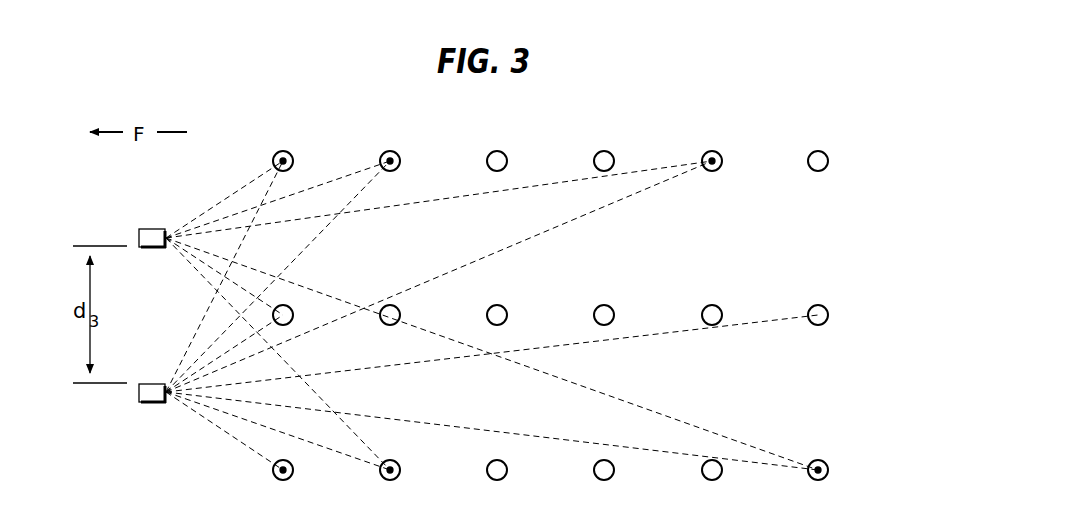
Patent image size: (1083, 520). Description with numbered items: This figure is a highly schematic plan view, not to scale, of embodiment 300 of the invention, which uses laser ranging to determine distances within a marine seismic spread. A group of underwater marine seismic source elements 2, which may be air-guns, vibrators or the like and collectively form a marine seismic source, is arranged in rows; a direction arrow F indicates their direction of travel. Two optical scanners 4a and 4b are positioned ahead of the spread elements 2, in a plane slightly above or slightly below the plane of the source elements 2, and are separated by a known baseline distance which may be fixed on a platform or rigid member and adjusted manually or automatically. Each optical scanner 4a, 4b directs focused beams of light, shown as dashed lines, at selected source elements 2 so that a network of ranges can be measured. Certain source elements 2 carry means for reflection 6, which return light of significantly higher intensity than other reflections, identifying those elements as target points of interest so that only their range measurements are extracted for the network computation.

The embodiment 300 is at (797, 108).
The source element 2 is at (493, 156).
The optical scanner 4a is at (150, 232).
The optical scanner 4b is at (150, 403).
The means for reflection 6 is at (383, 168).